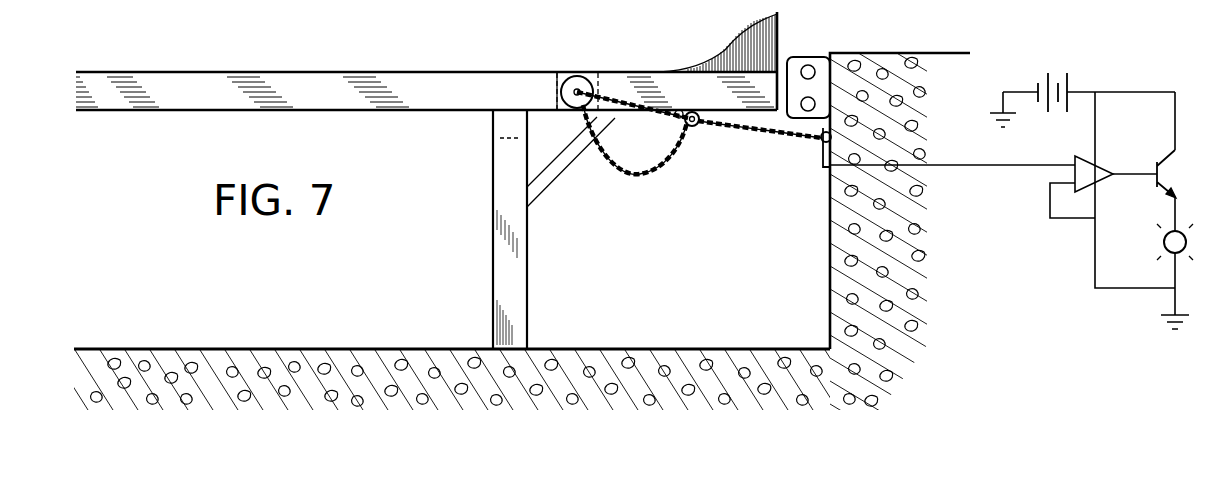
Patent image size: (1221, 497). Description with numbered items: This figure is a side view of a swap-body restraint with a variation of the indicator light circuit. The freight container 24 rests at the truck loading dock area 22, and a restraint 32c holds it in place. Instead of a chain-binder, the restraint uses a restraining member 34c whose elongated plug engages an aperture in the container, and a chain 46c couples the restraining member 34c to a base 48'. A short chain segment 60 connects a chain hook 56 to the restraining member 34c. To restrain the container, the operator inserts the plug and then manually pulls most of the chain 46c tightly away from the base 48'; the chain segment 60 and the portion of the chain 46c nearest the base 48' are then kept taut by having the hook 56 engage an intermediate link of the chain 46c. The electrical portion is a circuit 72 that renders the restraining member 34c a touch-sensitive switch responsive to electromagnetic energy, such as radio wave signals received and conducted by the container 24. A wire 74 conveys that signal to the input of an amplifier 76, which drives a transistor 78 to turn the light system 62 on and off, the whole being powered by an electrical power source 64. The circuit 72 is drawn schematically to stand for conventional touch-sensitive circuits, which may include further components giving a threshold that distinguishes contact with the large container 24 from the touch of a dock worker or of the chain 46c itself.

The truck loading dock area 22 is at (885, 53).
The freight container 24 is at (780, 29).
The restraint 32c is at (514, 152).
The restraining member 34c is at (565, 76).
The chain 46c is at (640, 180).
The base 48' is at (800, 194).
The chain hook 56 is at (692, 111).
The chain segment 60 is at (620, 100).
The light system 62 is at (1161, 244).
The electrical power source 64 is at (1067, 85).
The circuit 72 is at (1050, 267).
The wire 74 is at (1000, 167).
The amplifier 76 is at (1088, 152).
The transistor 78 is at (1167, 157).